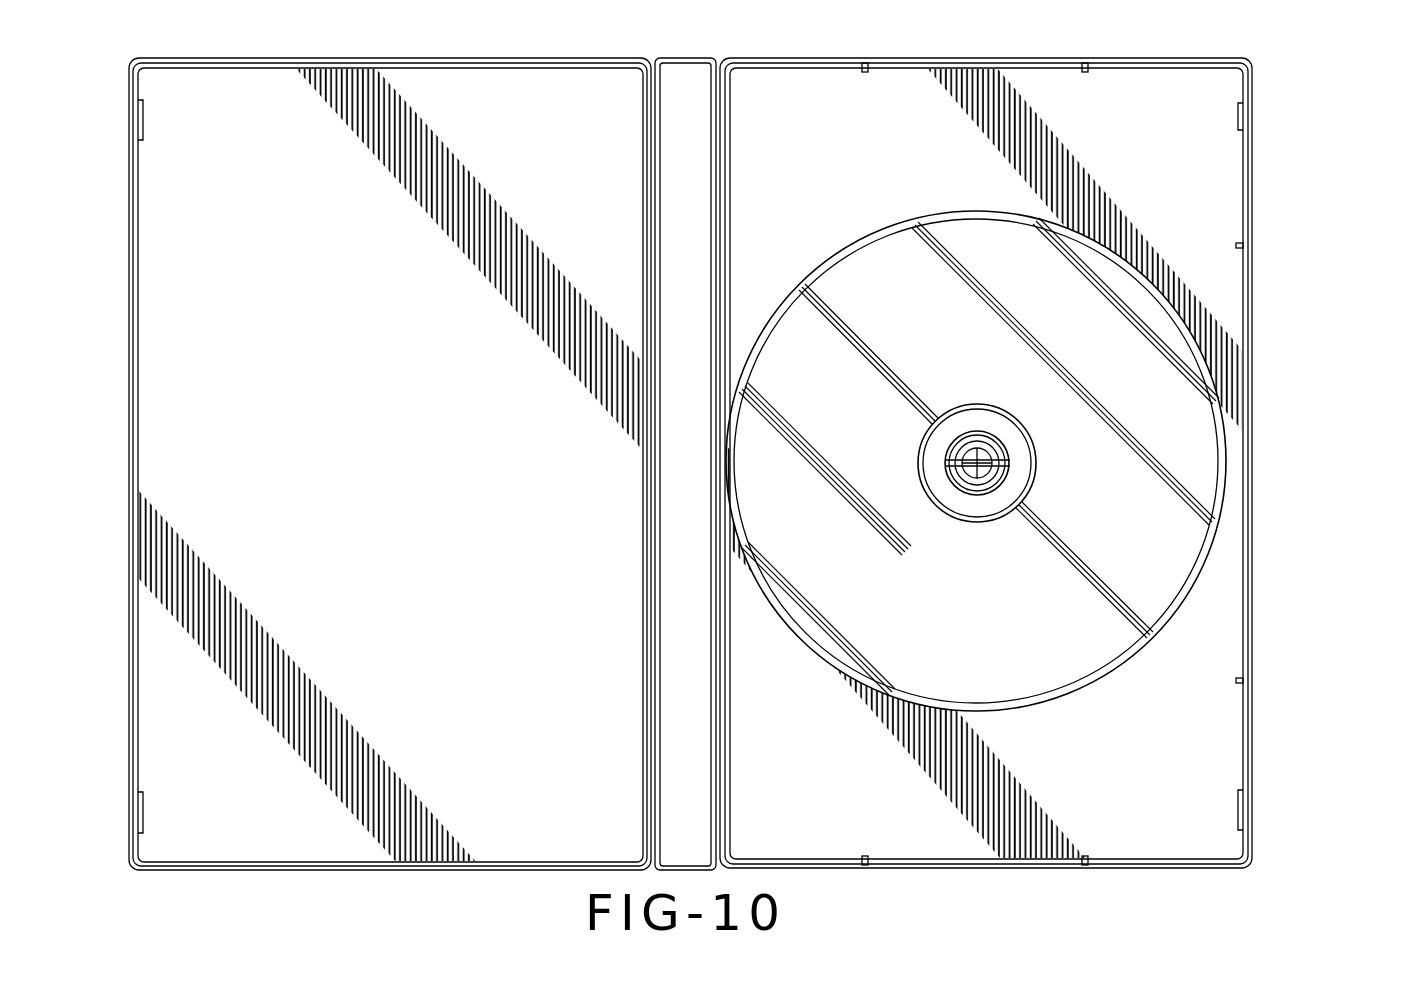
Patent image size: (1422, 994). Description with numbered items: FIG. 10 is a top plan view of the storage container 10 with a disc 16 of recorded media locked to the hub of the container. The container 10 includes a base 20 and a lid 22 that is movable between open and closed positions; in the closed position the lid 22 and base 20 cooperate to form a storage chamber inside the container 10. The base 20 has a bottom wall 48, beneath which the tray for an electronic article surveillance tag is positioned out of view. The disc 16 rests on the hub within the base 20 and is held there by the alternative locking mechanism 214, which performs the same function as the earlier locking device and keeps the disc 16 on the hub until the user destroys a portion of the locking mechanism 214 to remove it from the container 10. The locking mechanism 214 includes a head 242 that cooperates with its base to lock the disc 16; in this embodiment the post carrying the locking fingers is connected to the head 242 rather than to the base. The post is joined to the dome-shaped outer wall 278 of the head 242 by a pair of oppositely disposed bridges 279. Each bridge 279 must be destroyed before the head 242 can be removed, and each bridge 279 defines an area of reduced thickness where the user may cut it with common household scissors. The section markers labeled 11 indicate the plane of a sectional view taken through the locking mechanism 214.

The storage container 10 is at (1296, 100).
The lid 22 is at (207, 881).
The base 20 is at (811, 490).
The bottom wall 48 is at (1205, 740).
The disc 16 is at (1062, 676).
The locking mechanism 214 is at (994, 435).
The head 242 is at (920, 434).
The dome-shaped outer wall 278 is at (1015, 443).
The bridges 279 is at (945, 463).
The section line 11- 11 is at (978, 338).